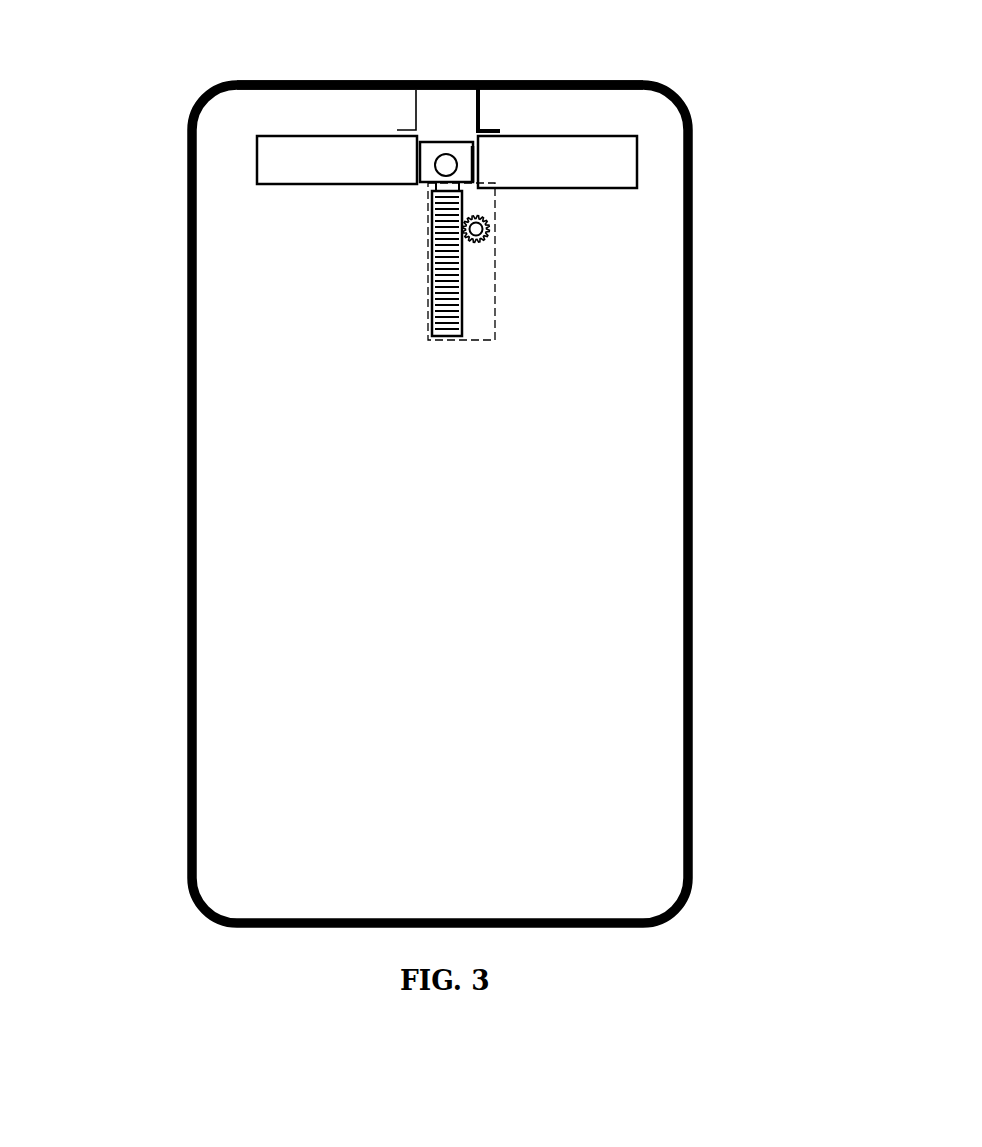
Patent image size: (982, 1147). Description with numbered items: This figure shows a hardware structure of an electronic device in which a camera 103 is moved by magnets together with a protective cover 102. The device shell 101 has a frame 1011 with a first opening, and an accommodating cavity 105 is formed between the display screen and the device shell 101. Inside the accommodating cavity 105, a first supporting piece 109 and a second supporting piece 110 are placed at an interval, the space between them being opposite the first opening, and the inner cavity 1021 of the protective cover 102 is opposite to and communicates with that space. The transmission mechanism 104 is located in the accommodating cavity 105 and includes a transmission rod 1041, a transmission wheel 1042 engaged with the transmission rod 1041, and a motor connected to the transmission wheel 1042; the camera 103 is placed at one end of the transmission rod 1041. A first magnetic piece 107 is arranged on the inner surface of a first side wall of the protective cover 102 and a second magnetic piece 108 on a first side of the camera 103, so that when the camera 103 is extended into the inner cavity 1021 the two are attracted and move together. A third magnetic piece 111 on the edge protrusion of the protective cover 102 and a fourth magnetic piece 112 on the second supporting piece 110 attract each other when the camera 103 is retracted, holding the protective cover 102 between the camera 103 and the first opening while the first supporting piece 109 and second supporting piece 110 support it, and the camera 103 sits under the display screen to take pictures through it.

The device shell 101 is at (692, 485).
The frame 1011 is at (263, 82).
The protective cover 102 is at (413, 112).
The inner cavity 1021 is at (426, 113).
The camera 103 is at (423, 186).
The transmission mechanism 104 is at (478, 340).
The transmission rod 1041 is at (473, 243).
The transmission wheel 1042 is at (430, 255).
The accommodating cavity 105 is at (322, 403).
The first magnetic piece 107 is at (562, 78).
The second magnetic piece 108 is at (477, 162).
The first supporting piece 109 is at (255, 137).
The second supporting piece 110 is at (640, 146).
The third magnetic piece 111 is at (500, 128).
The fourth magnetic piece 112 is at (478, 132).